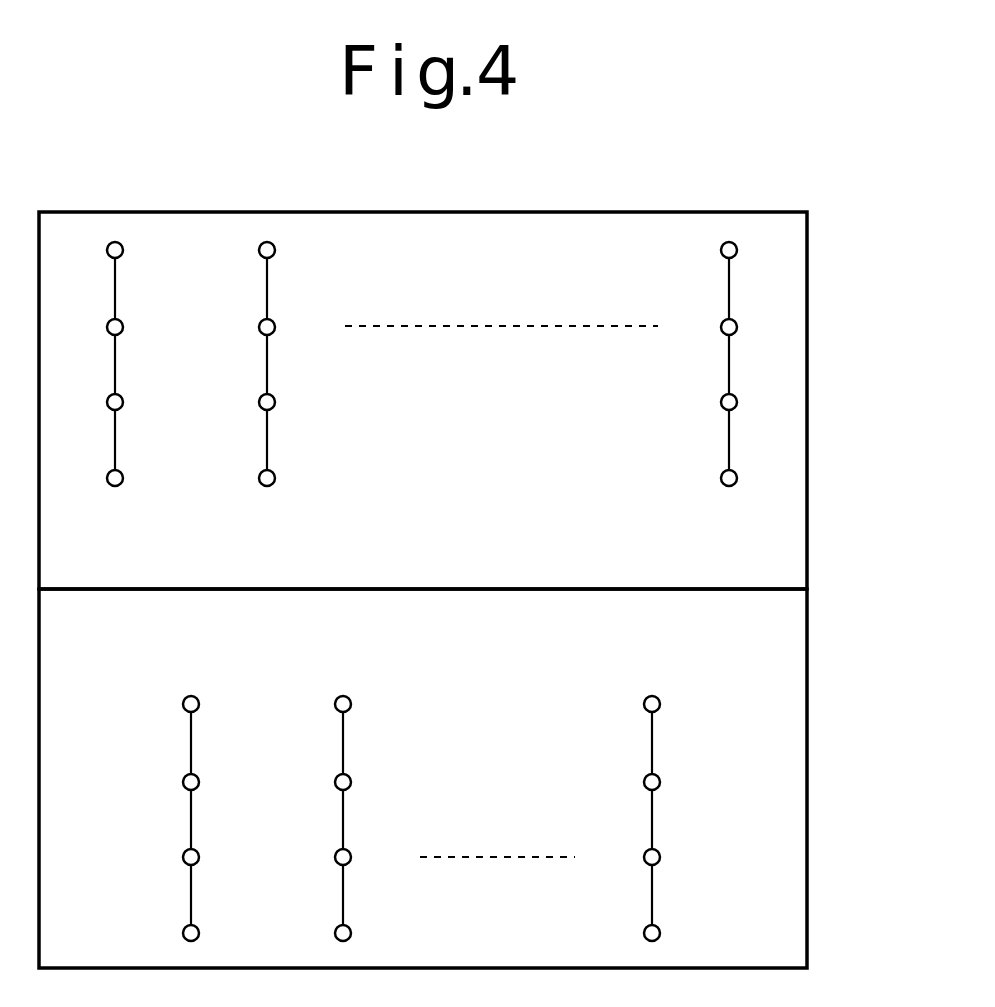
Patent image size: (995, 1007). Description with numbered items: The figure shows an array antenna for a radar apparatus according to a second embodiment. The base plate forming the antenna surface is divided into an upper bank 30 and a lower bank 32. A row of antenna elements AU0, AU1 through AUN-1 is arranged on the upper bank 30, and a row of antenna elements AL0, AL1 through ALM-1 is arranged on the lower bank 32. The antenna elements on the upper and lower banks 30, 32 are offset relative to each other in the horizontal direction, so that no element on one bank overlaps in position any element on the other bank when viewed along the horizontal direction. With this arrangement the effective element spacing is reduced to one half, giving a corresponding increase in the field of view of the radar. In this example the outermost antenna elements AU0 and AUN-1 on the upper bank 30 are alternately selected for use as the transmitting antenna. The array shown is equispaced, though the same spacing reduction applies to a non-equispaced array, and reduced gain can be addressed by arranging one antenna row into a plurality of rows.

The upper bank 30 is at (464, 400).
The lower bank 32 is at (464, 778).
The outermost antenna element on the upper bank AU0 is at (126, 401).
The antenna element on the upper bank AU1 is at (272, 401).
The outermost antenna element on the upper bank AUN-1 is at (744, 401).
The antenna element on the lower bank AL0 is at (189, 781).
The antenna element on the lower bank AL1 is at (339, 781).
The antenna element on the lower bank ALM-1 is at (645, 781).